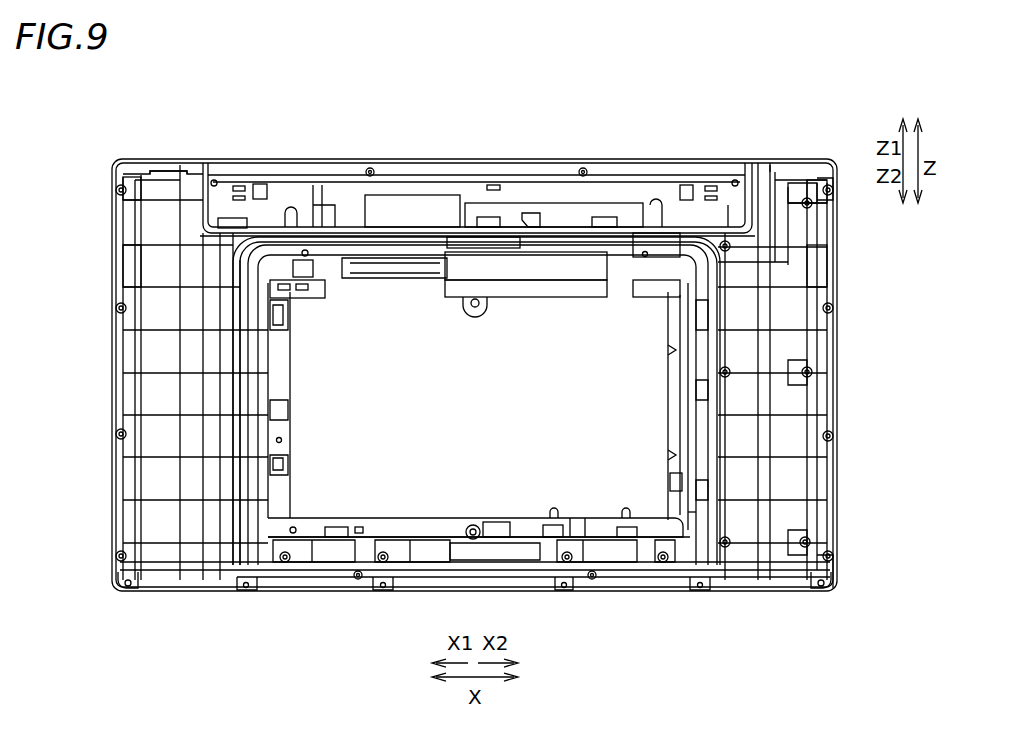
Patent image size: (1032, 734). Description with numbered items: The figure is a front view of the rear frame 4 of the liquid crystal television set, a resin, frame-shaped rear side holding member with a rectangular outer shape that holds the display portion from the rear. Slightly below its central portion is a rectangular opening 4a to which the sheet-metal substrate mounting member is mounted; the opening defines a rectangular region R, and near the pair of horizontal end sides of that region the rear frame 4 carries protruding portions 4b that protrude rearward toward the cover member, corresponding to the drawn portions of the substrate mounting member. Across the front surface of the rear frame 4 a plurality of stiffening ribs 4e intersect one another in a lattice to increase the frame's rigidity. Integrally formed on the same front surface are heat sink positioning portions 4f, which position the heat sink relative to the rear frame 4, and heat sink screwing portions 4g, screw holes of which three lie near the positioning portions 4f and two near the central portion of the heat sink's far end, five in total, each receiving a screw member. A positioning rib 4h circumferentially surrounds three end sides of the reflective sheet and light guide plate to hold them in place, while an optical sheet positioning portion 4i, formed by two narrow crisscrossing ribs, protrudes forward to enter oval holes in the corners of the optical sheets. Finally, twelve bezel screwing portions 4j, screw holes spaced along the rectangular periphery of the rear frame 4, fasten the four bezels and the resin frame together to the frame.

The rear frame 4 is at (86, 98).
The opening 4a is at (440, 507).
The protruding portions 4b is at (310, 298).
The stiffening ribs 4e is at (142, 172).
The heat sink positioning portions 4f is at (796, 204).
The heat sink screwing portions 4g is at (823, 187).
The positioning rib 4h is at (272, 178).
The optical sheet positioning portion 4i is at (172, 172).
The bezel screwing portions 4j is at (118, 188).
The rectangular region R is at (648, 512).